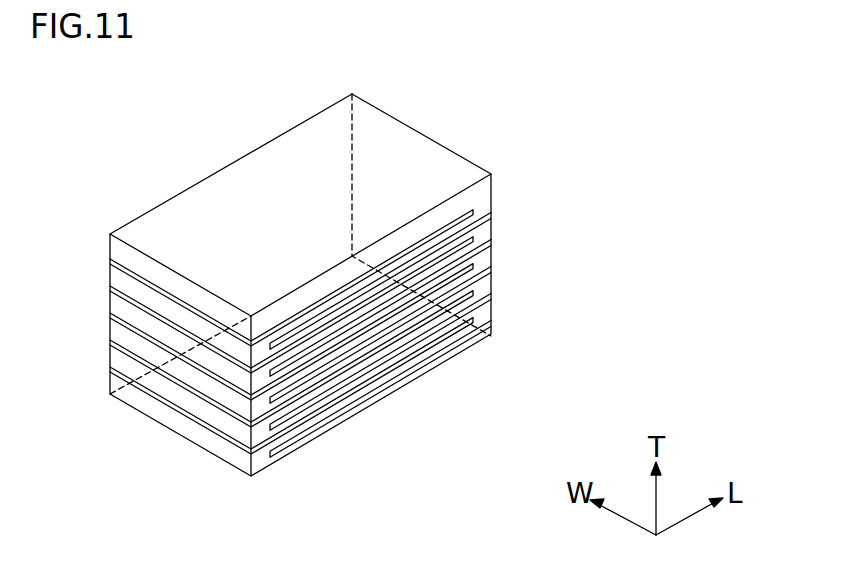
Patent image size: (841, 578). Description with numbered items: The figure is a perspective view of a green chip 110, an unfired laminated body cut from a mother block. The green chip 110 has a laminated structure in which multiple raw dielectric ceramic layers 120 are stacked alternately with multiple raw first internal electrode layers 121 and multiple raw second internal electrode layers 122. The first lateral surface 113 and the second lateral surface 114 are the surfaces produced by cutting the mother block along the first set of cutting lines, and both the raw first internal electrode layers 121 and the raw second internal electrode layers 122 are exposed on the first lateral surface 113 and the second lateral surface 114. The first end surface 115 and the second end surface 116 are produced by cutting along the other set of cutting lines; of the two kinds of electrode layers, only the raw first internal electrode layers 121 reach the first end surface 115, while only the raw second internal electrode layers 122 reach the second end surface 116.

The green chip 110 is at (100, 118).
The first lateral surface 113 is at (413, 363).
The second lateral surface 114 is at (222, 203).
The first end surface 115 is at (170, 390).
The second end surface 116 is at (407, 157).
The raw dielectric ceramic layer 120 is at (343, 373).
The raw first internal electrode layer 121 is at (130, 302).
The raw second internal electrode layer 122 is at (483, 250).